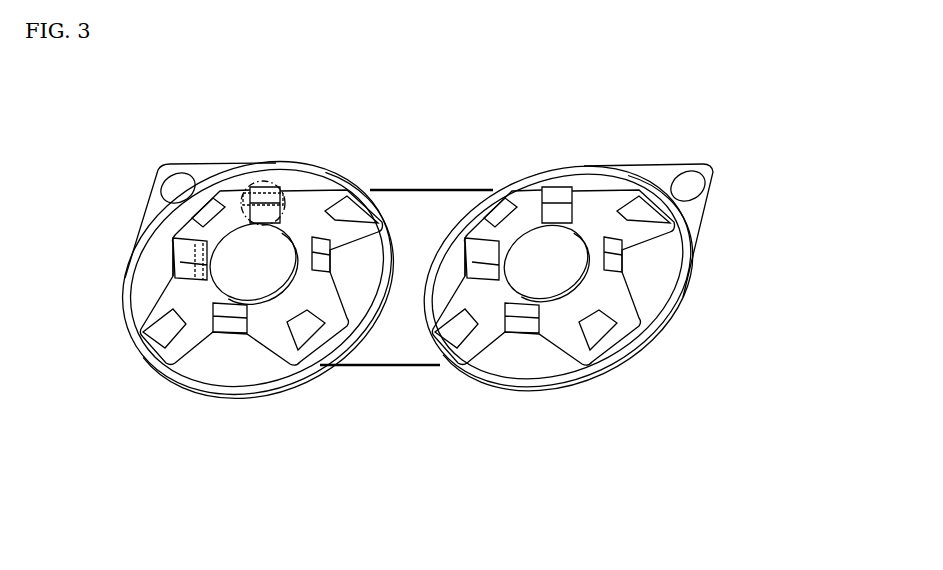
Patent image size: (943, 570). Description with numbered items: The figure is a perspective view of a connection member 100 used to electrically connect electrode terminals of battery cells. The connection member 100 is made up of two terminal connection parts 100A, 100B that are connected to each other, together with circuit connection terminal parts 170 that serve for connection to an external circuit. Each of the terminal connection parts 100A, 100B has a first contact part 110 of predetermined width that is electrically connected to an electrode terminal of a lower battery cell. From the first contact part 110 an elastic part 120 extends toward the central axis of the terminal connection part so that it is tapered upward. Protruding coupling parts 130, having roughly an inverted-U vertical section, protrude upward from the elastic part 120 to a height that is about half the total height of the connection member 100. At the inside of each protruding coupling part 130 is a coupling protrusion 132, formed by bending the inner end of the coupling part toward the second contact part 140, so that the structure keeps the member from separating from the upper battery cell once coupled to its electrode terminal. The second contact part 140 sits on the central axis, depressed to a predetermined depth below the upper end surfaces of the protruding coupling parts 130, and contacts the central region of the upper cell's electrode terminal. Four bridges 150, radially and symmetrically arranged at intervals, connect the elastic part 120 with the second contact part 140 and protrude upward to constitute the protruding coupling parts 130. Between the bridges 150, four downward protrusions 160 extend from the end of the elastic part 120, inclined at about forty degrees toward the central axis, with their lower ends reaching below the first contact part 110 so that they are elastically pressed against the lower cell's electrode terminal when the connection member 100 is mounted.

The connection member 100 is at (118, 118).
The terminal connection part 100A is at (342, 151).
The terminal connection part 100B is at (570, 149).
The first contact part 110 is at (480, 383).
The elastic part 120 is at (655, 280).
The protruding coupling part 130 is at (265, 186).
The coupling protrusion 132 is at (268, 192).
The second contact part 140 is at (236, 249).
The bridge 150 is at (175, 274).
The downward protrusion 160 is at (302, 334).
The circuit connection terminal part 170 is at (688, 187).